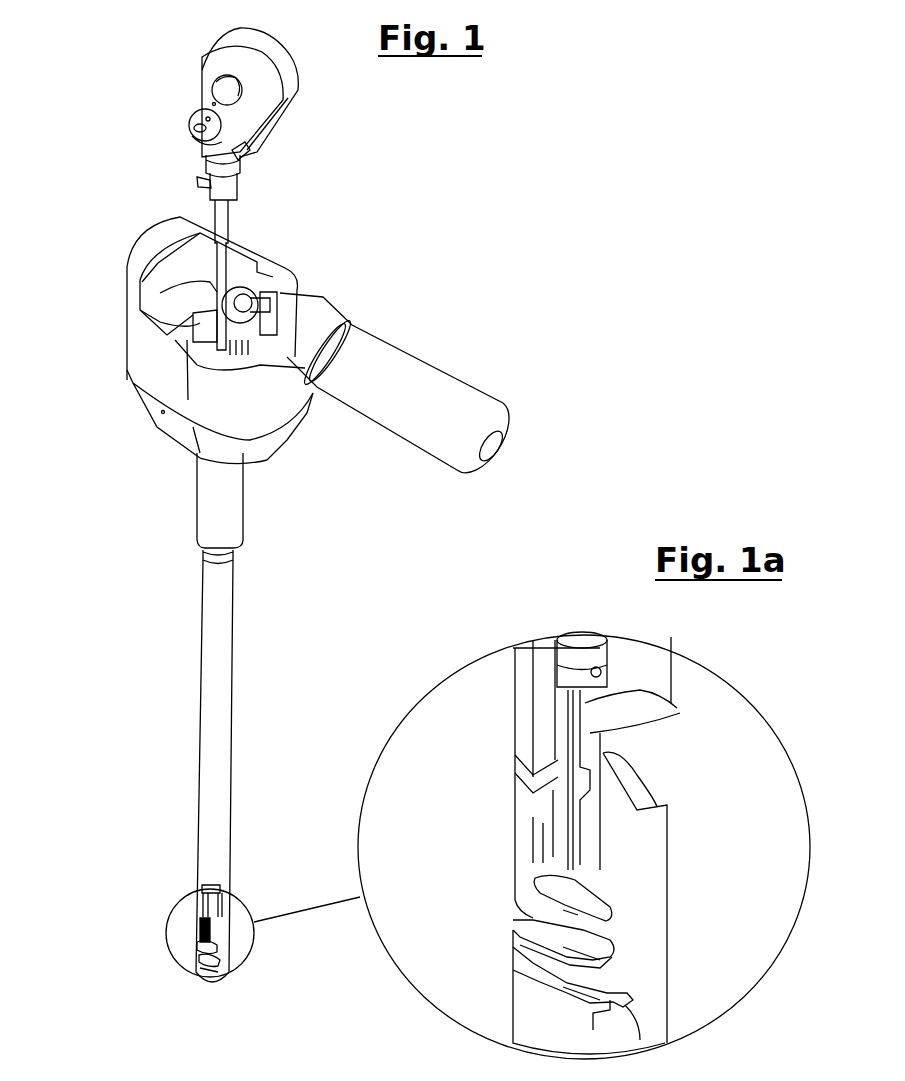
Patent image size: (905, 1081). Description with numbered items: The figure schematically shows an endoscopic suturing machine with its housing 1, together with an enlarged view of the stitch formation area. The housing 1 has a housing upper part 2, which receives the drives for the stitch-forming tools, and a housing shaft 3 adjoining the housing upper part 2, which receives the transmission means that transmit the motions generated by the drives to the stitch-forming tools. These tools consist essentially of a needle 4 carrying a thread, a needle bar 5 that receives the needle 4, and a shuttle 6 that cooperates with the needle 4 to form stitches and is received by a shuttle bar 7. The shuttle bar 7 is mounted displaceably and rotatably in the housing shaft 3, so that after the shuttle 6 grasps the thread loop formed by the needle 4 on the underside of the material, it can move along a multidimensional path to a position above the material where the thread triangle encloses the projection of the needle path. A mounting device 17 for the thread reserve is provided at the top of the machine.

In FIG. 1, the housing 1 is at (425, 266).
In FIG. 1, the housing upper part 2 is at (303, 282).
In FIG. 1, the housing shaft 3 is at (212, 680).
In FIG. 1A, the needle 4 is at (572, 747).
In FIG. 1, the needle bar 5 is at (240, 285).
In FIG. 1A, the needle bar 5 is at (515, 648).
In FIG. 1A, the shuttle 6 is at (555, 870).
In FIG. 1A, the shuttle bar 7 is at (590, 735).
In FIG. 1, the mounting device 17 is at (312, 91).